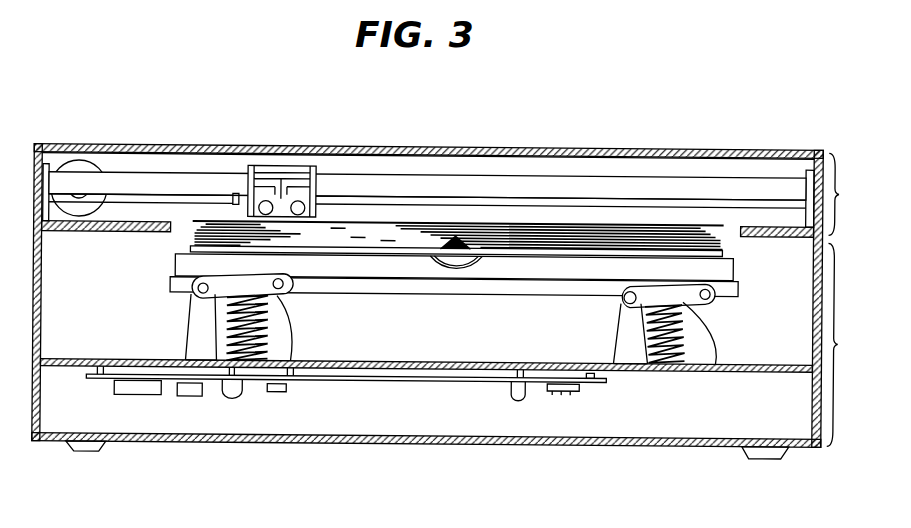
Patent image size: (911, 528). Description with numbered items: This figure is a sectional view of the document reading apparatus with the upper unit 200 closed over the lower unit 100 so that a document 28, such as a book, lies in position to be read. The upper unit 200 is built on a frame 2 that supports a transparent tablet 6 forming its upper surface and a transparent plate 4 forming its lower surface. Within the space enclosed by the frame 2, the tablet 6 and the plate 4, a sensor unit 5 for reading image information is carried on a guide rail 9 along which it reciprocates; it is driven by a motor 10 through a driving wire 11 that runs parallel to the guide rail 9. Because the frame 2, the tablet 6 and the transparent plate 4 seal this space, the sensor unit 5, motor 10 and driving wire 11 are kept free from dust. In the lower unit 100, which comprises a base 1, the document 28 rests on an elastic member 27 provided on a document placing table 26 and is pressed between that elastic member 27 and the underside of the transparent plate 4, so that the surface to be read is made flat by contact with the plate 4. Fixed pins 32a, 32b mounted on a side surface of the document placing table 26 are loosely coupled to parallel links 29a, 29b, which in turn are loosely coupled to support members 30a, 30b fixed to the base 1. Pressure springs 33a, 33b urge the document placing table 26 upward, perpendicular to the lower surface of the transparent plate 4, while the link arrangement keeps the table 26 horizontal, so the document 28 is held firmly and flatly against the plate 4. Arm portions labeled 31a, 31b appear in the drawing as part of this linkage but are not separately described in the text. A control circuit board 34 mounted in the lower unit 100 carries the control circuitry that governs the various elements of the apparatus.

The base 1 is at (800, 448).
The frame 2 is at (782, 149).
The transparent plate 4 is at (571, 226).
The sensor unit 5 is at (316, 168).
The transparent tablet 6 is at (530, 150).
The guide rail 9 is at (440, 178).
The motor 10 is at (90, 164).
The driving wire 11 is at (160, 198).
The document placing table 26 is at (728, 297).
The elastic member 27 is at (598, 272).
The document 28 is at (573, 254).
The parallel link 29a is at (290, 362).
The parallel link 29b is at (667, 300).
The support member 30a is at (205, 356).
The support member 30b is at (632, 357).
The support arm 31a is at (200, 283).
The support arm 31b is at (630, 288).
The fixed pin 32a is at (300, 283).
The fixed pin 32b is at (700, 284).
The pressure spring 33a is at (263, 356).
The pressure spring 33b is at (695, 366).
The control circuit board 34 is at (105, 381).
The lower unit 100 is at (881, 354).
The upper unit 200 is at (881, 207).